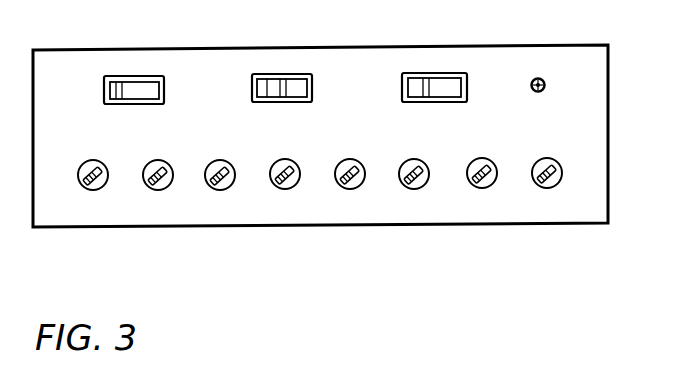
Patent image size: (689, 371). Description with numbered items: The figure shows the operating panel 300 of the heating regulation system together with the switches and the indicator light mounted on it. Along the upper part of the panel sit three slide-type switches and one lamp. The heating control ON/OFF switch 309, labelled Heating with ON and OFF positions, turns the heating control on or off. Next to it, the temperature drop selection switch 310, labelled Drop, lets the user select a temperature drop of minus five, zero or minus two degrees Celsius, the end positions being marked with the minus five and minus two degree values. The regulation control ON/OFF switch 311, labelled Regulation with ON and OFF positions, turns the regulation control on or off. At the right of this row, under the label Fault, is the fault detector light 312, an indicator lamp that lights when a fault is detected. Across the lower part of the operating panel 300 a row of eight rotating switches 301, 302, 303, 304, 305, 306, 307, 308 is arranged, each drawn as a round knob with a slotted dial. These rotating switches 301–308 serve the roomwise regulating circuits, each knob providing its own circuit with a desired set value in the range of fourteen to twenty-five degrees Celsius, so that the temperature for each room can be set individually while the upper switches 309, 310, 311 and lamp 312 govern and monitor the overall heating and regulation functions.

The operating panel 300 is at (620, 201).
The rotating switch 301 is at (92, 191).
The rotating switch 302 is at (157, 191).
The rotating switch 303 is at (219, 191).
The rotating switch 304 is at (284, 190).
The rotating switch 305 is at (349, 190).
The rotating switch 306 is at (413, 190).
The rotating switch 307 is at (480, 189).
The rotating switch 308 is at (545, 189).
The heating control ON/OFF switch 309 is at (117, 82).
The temperature drop selection switch 310 is at (266, 82).
The regulation control ON/OFF switch 311 is at (416, 80).
The fault detector light 312 is at (536, 78).